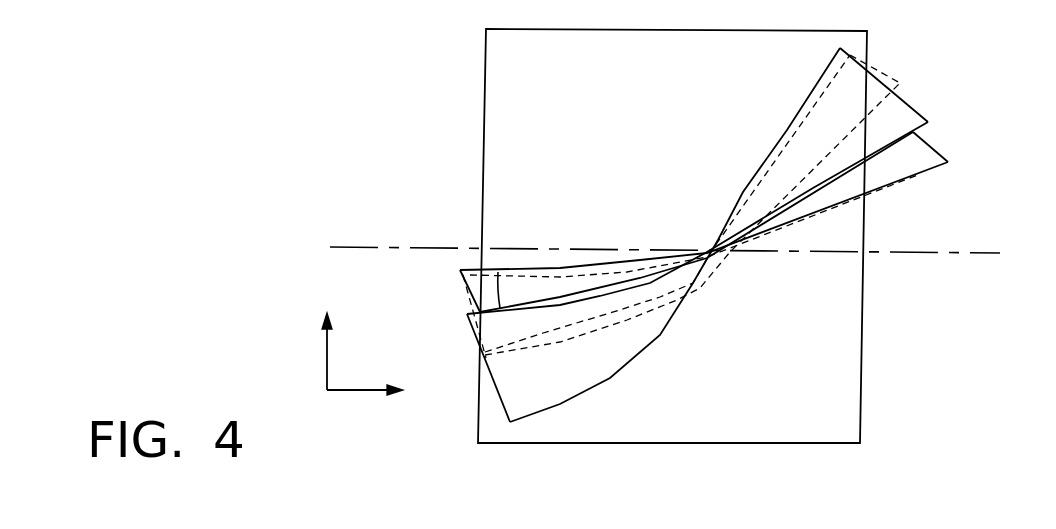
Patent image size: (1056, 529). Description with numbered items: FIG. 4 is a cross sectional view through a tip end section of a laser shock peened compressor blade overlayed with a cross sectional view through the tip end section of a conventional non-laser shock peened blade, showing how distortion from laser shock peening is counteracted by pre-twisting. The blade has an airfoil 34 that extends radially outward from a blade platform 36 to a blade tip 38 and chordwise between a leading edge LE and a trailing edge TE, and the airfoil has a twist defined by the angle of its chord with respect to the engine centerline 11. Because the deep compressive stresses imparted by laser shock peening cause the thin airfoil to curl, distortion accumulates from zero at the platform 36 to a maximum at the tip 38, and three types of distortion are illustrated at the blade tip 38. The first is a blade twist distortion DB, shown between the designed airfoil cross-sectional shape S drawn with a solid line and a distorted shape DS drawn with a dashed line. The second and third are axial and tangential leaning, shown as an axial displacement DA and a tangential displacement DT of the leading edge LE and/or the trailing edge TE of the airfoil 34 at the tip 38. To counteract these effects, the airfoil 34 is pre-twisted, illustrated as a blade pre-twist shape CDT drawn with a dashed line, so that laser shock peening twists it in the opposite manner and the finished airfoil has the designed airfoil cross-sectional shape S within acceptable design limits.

The engine centerline 11 is at (907, 253).
The airfoil 34 is at (514, 396).
The blade platform 36 is at (508, 195).
The blade tip 38 is at (563, 300).
The trailing edge TE is at (907, 100).
The leading edge LE is at (476, 336).
The designed airfoil cross-sectional shape S is at (890, 148).
The distorted shape DS is at (882, 193).
The blade pre-twist shape CDT is at (803, 168).
The blade twist distortion DB is at (462, 272).
The tangential displacement DT is at (327, 352).
The axial displacement DA is at (348, 390).